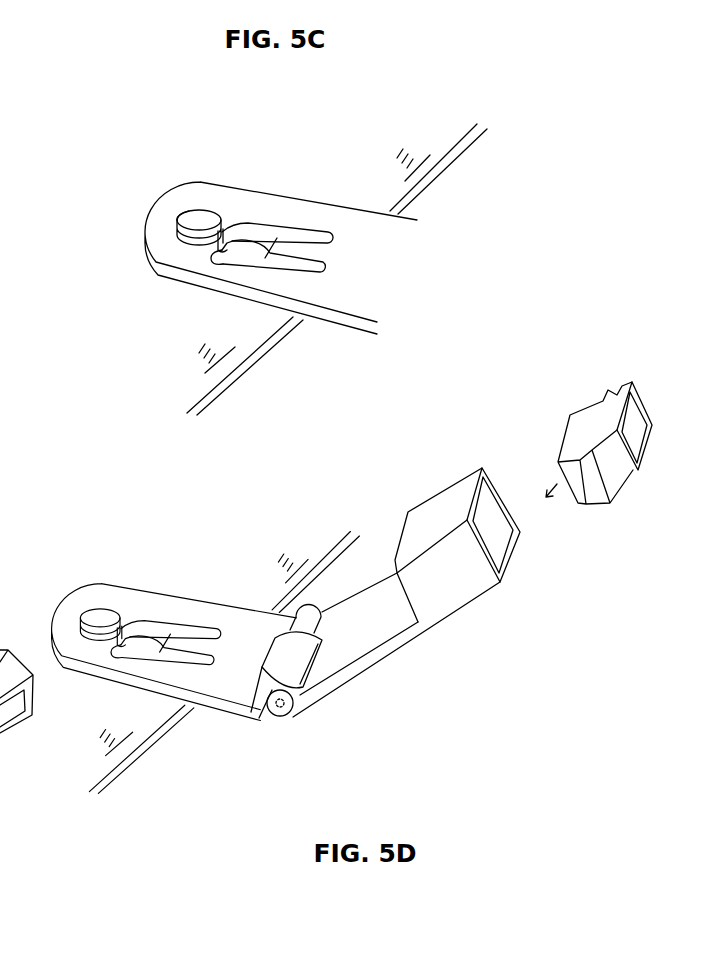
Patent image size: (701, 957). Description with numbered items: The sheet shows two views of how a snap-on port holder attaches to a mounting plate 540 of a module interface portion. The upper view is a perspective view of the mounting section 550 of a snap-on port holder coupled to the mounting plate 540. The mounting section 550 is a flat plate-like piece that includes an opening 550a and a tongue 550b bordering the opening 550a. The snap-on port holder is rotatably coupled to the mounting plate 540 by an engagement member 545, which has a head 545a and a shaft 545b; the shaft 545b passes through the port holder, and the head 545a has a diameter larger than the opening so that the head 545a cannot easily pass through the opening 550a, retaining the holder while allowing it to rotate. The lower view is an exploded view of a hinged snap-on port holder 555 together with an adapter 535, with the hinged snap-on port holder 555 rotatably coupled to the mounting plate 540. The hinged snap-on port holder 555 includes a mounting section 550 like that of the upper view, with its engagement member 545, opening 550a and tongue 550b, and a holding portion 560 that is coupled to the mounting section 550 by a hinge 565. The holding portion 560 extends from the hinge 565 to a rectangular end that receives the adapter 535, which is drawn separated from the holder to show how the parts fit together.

In FIG. 5D, the adapter 535 is at (583, 490).
In FIG. 5C, the mounting plate 540 is at (245, 337).
In FIG. 5D, the mounting plate 540 is at (138, 720).
In FIG. 5C, the engagement member 545 is at (203, 218).
In FIG. 5D, the engagement member 545 is at (103, 613).
In FIG. 5C, the head 545a is at (178, 222).
In FIG. 5C, the shaft 545b is at (215, 247).
In FIG. 5D, the shaft 545b is at (121, 636).
In FIG. 5C, the mounting section 550 is at (168, 202).
In FIG. 5D, the mounting section 550 is at (73, 598).
In FIG. 5C, the opening 550a is at (220, 260).
In FIG. 5D, the opening 550a is at (120, 650).
In FIG. 5C, the tongue 550b is at (295, 252).
In FIG. 5D, the tongue 550b is at (187, 643).
In FIG. 5D, the hinged snap-on port holder 555 is at (330, 763).
In FIG. 5D, the holding portion 560 is at (380, 628).
In FIG. 5D, the hinge 565 is at (277, 727).